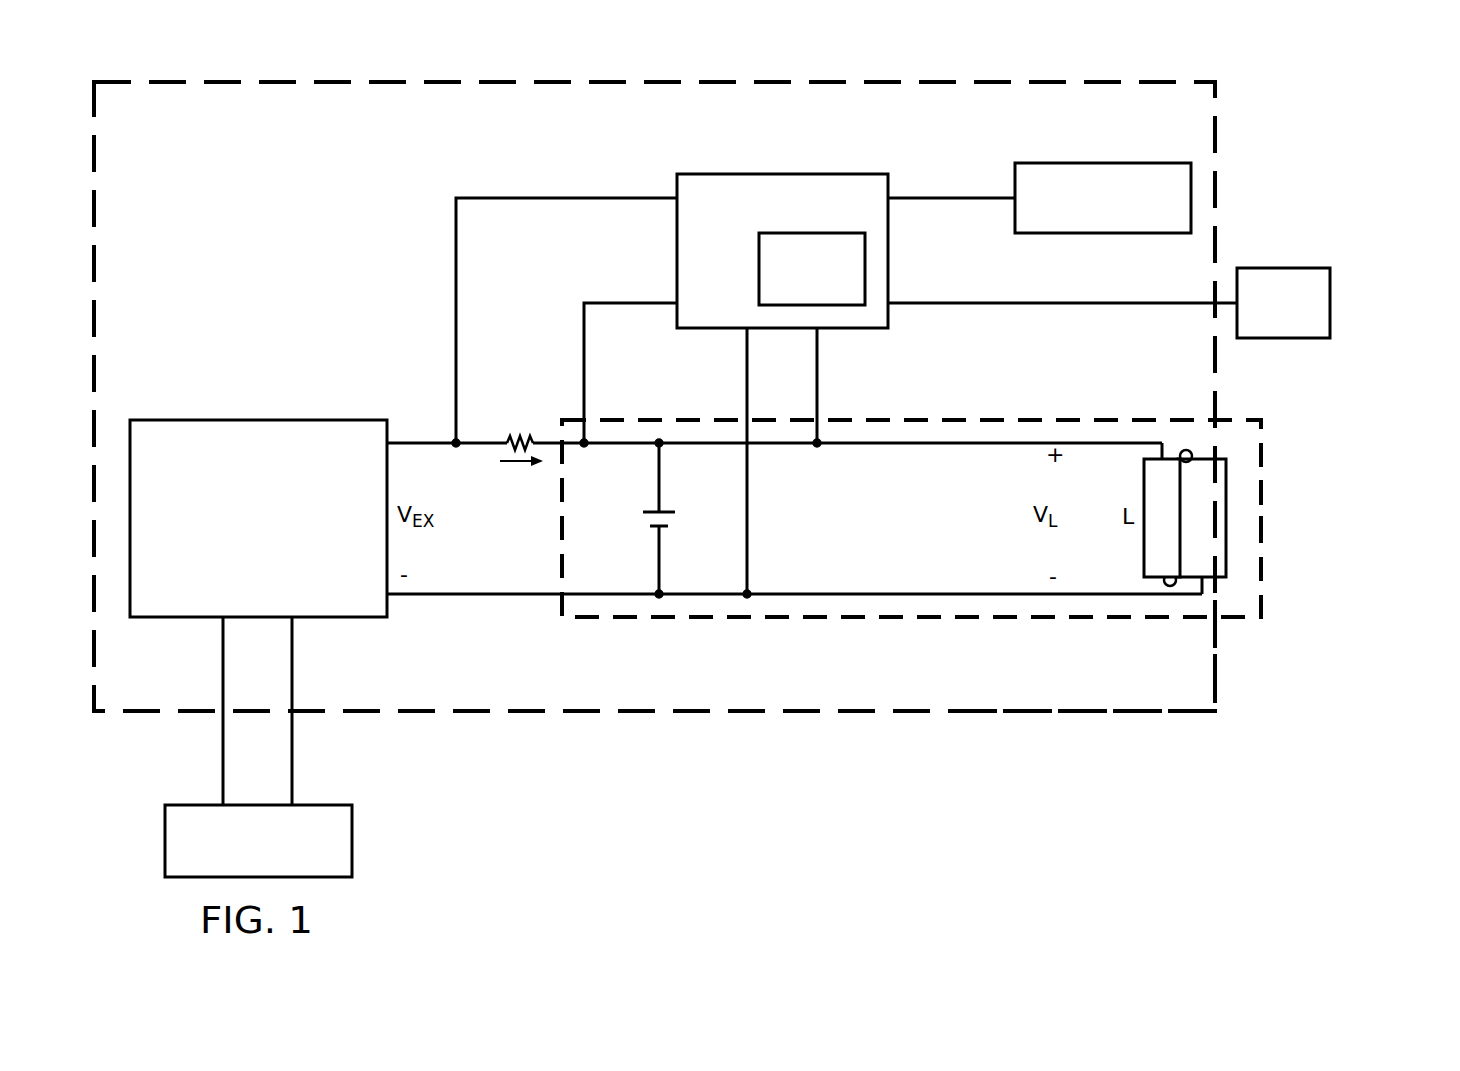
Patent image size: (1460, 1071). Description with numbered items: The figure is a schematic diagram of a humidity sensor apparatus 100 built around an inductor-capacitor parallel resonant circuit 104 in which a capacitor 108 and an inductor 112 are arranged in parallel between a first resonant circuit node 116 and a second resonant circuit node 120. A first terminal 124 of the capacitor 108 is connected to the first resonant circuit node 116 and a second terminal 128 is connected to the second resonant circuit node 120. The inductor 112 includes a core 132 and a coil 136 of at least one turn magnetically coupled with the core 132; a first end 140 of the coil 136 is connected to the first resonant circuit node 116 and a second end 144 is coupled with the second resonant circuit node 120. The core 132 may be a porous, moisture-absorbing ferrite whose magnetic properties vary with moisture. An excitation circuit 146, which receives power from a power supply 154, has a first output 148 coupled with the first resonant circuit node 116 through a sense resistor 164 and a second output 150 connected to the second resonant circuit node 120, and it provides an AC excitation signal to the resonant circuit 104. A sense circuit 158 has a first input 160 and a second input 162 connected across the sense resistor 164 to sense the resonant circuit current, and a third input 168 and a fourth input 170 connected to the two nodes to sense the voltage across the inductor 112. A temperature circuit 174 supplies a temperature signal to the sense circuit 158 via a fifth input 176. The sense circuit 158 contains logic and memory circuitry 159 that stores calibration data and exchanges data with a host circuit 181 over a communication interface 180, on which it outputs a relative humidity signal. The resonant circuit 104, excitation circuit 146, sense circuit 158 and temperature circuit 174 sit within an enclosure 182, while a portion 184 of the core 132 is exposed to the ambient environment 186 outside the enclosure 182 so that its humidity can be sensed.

The humidity sensor apparatus 100 is at (1352, 72).
The inductor-capacitor parallel resonant circuit 104 is at (925, 626).
The capacitor 108 is at (683, 540).
The inductor 112 is at (1125, 578).
The first resonant circuit node 116 is at (783, 447).
The second resonant circuit node 120 is at (783, 591).
The first terminal 124 is at (650, 455).
The second terminal 128 is at (655, 590).
The core 132 is at (1150, 479).
The coil 136 is at (1188, 449).
The first end 140 is at (1160, 450).
The second end 144 is at (1185, 600).
The excitation circuit 146 is at (281, 567).
The first output 148 is at (421, 441).
The second output 150 is at (420, 598).
The power supply 154 is at (165, 841).
The sense circuit 158 is at (782, 172).
The logic and memory circuitry 159 is at (758, 267).
The first input 160 is at (567, 196).
The second input 162 is at (632, 301).
The sense resistor 164 is at (518, 440).
The third input 168 is at (820, 372).
The fourth input 170 is at (745, 372).
The temperature circuit 174 is at (1103, 161).
The fifth input 176 is at (948, 200).
The communication interface 180 is at (1046, 306).
The host circuit 181 is at (1284, 267).
The enclosure 182 is at (992, 718).
The portion 184 is at (1250, 545).
The ambient environment 186 is at (1338, 526).